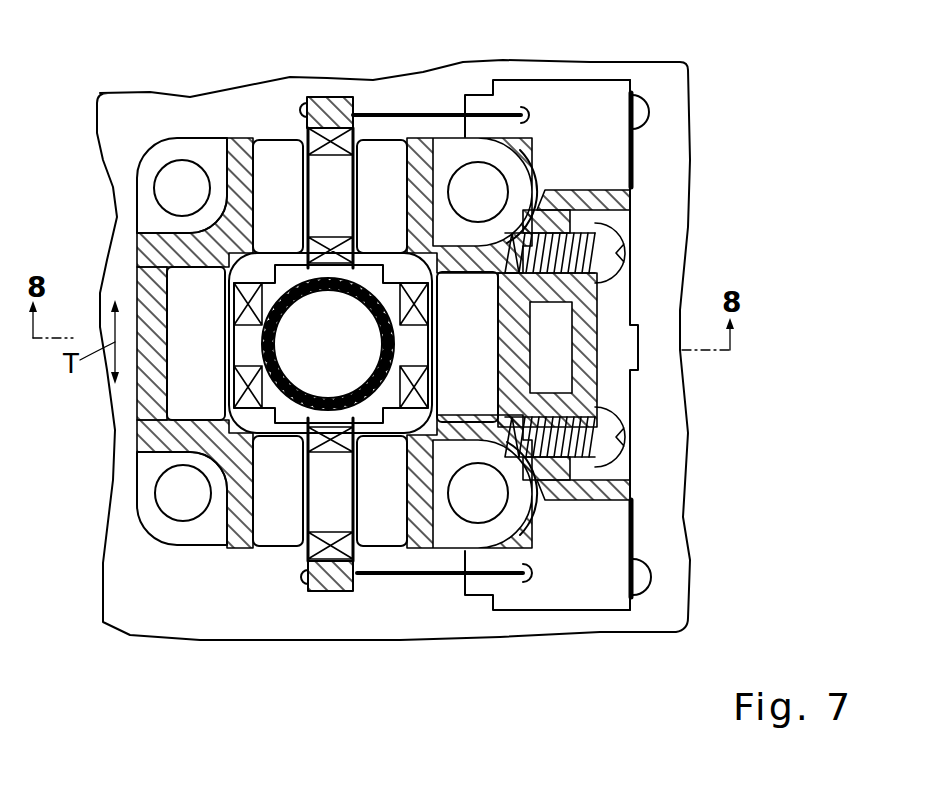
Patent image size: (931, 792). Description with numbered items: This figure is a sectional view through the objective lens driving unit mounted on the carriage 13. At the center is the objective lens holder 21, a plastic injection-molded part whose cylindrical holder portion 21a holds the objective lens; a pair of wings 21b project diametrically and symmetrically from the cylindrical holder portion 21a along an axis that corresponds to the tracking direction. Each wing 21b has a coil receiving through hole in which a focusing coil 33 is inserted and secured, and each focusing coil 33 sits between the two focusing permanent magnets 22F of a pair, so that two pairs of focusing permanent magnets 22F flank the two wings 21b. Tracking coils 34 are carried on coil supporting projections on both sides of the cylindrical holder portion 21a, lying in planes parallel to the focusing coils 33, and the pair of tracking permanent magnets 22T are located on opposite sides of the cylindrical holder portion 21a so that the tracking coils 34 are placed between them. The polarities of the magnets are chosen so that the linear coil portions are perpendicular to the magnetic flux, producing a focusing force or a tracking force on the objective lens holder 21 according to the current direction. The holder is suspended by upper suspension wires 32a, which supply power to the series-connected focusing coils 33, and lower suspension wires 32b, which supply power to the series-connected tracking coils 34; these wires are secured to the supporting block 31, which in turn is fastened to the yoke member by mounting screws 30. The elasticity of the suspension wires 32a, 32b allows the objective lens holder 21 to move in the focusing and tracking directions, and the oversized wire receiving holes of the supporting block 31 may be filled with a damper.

The carriage 13 is at (688, 565).
The objective lens holder 21 is at (316, 602).
The cylindrical holder portion 21a is at (275, 349).
The wings 21b is at (334, 100).
The focusing permanent magnets 22F is at (268, 150).
The tracking permanent magnets 22T is at (177, 393).
The mounting screws 30 is at (622, 262).
The supporting block 31 is at (592, 137).
The upper suspension wires 32a is at (400, 113).
The lower suspension wires 32b is at (450, 647).
The focusing coils 33 is at (362, 247).
The tracking coils 34 is at (233, 387).